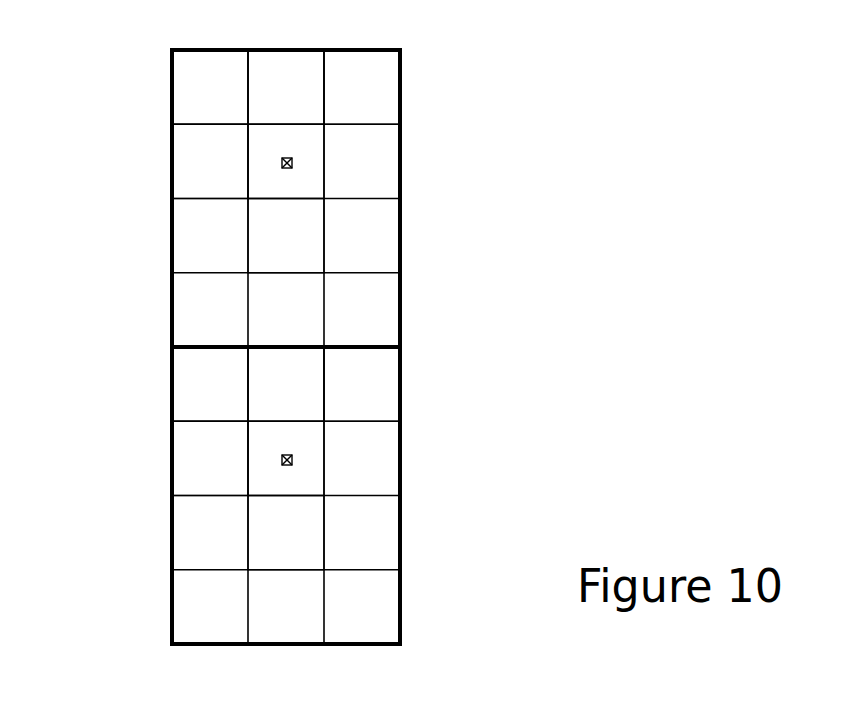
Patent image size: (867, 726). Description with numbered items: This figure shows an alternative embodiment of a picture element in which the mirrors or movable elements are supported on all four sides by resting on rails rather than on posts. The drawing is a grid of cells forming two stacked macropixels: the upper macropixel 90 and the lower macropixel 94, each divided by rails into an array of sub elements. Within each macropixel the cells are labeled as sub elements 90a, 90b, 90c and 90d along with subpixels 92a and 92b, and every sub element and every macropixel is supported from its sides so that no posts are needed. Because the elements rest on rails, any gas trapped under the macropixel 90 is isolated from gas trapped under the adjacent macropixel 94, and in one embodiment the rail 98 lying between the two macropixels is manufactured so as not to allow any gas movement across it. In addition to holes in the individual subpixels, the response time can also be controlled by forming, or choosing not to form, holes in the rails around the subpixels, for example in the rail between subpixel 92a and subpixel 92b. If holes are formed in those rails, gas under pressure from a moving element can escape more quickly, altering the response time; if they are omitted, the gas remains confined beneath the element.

The macropixel 90 is at (435, 347).
The second data block 94 is at (435, 644).
The rail 98 is at (170, 345).
The data cell 90a is at (210, 235).
The data cell 90b is at (286, 235).
The data cell 90c is at (362, 235).
The data cell 90d is at (210, 309).
The subpixel 92a is at (286, 309).
The subpixel 92b is at (286, 384).